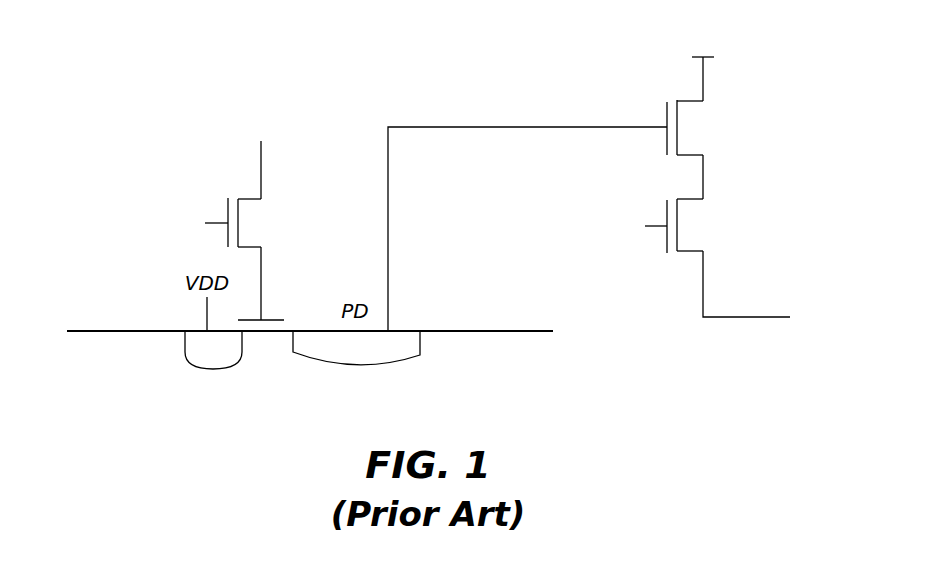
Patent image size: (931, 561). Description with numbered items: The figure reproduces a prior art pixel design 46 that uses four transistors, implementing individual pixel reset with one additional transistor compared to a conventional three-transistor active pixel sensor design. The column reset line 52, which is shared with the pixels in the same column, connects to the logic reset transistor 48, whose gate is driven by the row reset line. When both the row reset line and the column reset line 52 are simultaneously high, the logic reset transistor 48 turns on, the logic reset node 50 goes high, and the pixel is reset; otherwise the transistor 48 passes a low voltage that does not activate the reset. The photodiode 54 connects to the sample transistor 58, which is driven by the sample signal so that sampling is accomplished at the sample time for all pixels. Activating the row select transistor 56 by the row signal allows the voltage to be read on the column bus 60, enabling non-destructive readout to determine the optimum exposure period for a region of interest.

The pixel circuit (prior art) 46 is at (188, 86).
The logic reset transistor 48 is at (227, 232).
The node LRST 50 is at (280, 274).
The column reset line CRST 52 is at (276, 157).
The photodiode 54 is at (425, 364).
The row select transistor 56 is at (665, 245).
The sample transistor 58 is at (724, 134).
The column bus 60 is at (746, 284).